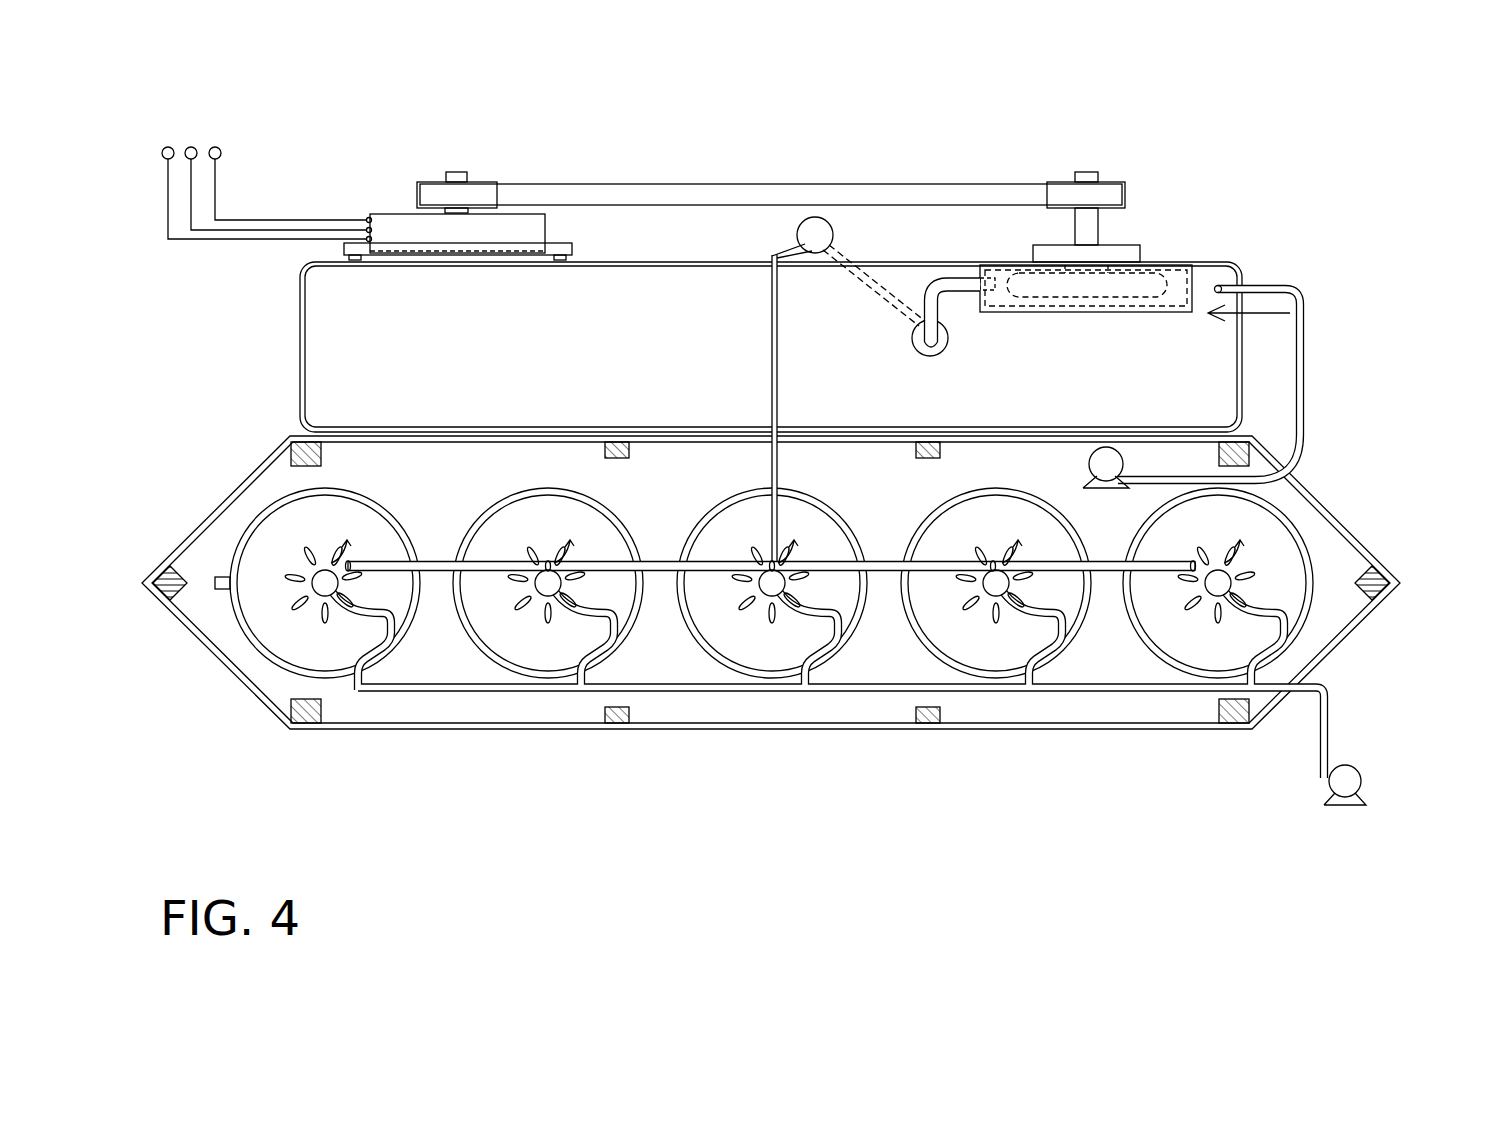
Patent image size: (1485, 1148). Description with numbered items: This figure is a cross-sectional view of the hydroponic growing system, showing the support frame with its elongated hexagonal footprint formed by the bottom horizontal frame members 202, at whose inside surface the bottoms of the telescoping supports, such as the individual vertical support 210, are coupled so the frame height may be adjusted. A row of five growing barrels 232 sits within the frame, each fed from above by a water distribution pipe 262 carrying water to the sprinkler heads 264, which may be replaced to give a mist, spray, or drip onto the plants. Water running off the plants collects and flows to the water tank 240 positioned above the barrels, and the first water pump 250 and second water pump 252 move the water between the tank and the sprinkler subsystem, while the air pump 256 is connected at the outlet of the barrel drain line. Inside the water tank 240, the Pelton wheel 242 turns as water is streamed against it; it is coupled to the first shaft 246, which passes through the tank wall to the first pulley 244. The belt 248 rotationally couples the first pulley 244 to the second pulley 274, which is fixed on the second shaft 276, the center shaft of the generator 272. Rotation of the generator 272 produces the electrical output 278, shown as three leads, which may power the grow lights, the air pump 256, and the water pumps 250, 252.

The bottom horizontal frame members 202 is at (238, 667).
The individual vertical support 210 is at (933, 730).
The growing barrels 232 is at (1164, 648).
The water tank 240 is at (300, 330).
The Pelton wheel 242 is at (1140, 288).
The first pulley 244 is at (1115, 180).
The first shaft 246 is at (1090, 175).
The belt 248 is at (611, 192).
The first water pump 250 is at (834, 234).
The second water pump 252 is at (1110, 450).
The air pump 256 is at (1362, 781).
The water distribution pipes 262 is at (772, 363).
The sprinkler heads 264 is at (548, 567).
The generator 272 is at (381, 234).
The second pulley 274 is at (492, 182).
The second shaft 276 is at (465, 173).
The electrical output 278 is at (155, 115).